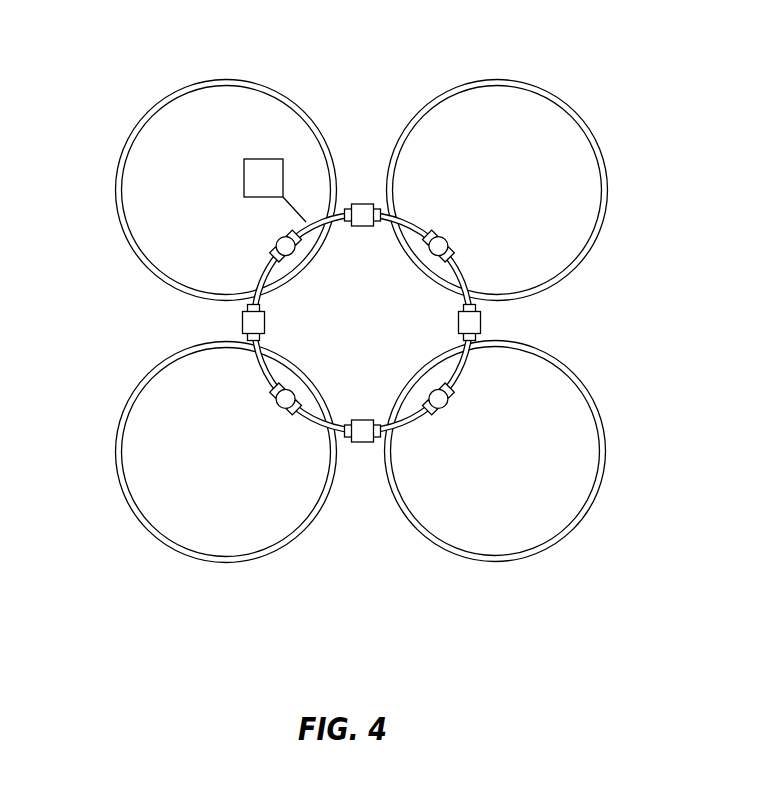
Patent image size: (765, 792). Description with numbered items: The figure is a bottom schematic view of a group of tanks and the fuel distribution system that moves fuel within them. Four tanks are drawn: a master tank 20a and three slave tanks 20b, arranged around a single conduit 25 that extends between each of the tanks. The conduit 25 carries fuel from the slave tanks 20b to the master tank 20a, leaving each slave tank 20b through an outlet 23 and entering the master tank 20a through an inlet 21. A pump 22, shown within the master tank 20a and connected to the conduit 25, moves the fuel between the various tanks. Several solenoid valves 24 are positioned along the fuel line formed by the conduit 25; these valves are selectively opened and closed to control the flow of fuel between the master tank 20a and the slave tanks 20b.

The master tank 20a is at (150, 143).
The slave tank 20b is at (560, 143).
The inlet 21 is at (276, 242).
The pump 22 is at (243, 170).
The outlet 23 is at (444, 243).
The solenoid valve 24 is at (364, 205).
The conduit 25 is at (317, 215).